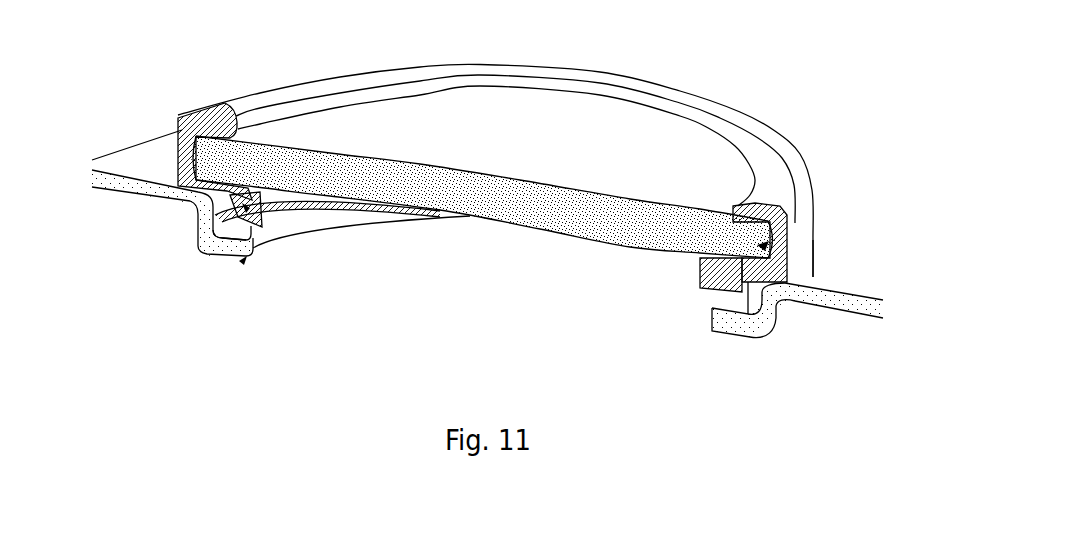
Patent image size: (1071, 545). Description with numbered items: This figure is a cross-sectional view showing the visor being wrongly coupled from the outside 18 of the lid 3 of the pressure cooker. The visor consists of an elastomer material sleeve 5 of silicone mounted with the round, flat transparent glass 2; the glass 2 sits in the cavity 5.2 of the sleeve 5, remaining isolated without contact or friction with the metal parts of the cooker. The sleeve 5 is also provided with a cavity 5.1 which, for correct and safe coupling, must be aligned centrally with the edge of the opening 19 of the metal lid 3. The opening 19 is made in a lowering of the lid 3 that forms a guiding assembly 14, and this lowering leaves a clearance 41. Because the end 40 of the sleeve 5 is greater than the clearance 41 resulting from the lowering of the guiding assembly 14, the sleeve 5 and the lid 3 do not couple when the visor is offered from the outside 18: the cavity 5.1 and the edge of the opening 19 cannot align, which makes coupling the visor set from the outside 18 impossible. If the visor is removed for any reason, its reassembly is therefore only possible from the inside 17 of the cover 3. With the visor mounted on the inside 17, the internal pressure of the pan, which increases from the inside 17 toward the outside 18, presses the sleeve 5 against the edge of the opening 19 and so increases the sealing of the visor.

The transparent glass 2 is at (470, 127).
The lid 3 is at (203, 208).
The elastomer material sleeve 5 is at (182, 118).
The cavity of the sleeve 5.1 is at (244, 205).
The cavity of the sleeve 5.2 is at (703, 278).
The guiding assembly 14 is at (762, 334).
The inside 17 is at (834, 315).
The outside 18 is at (834, 256).
The opening 19 is at (247, 256).
The end of the sleeve 40 is at (781, 232).
The clearance 41 is at (715, 322).